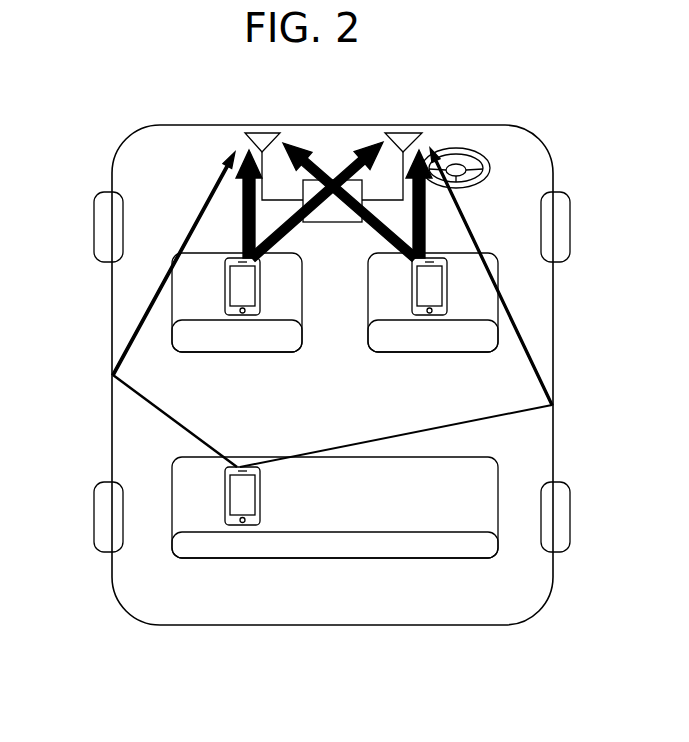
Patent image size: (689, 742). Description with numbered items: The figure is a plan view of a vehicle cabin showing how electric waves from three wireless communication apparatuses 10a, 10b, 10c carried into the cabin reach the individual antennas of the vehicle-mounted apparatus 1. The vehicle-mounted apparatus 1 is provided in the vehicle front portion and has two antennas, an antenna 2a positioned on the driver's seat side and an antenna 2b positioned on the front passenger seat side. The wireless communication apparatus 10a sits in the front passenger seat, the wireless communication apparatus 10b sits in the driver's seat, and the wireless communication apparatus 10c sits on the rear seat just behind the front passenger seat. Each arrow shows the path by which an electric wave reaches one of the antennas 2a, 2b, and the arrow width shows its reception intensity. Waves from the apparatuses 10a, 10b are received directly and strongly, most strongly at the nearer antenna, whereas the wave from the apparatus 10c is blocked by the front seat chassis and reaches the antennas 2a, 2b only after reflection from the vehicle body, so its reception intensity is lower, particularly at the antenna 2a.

The vehicle-mounted apparatus 1 is at (320, 222).
The antenna 2a is at (399, 131).
The antenna 2b is at (259, 131).
The wireless communication apparatus 10a is at (223, 288).
The wireless communication apparatus 10b is at (410, 290).
The wireless communication apparatus 10c is at (223, 495).